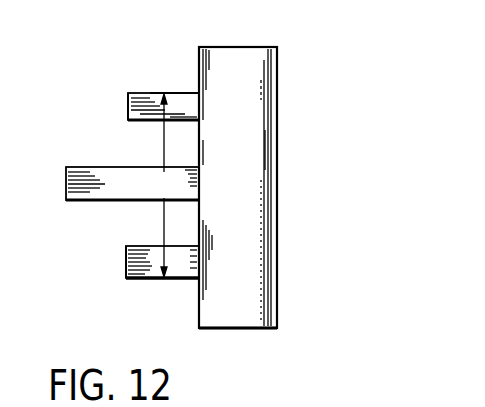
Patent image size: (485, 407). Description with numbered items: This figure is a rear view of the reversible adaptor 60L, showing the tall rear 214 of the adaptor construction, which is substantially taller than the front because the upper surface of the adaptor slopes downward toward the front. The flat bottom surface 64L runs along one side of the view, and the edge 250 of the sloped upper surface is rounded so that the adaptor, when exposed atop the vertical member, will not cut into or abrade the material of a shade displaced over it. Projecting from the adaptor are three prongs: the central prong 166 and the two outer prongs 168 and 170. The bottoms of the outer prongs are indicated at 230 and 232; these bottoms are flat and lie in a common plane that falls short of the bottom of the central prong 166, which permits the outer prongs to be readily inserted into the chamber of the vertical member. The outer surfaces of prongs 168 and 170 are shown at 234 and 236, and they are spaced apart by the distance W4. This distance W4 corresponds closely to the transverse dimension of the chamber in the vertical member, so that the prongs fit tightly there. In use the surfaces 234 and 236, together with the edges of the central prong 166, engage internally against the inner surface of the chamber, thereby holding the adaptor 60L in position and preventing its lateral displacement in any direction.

The adaptor 60L is at (251, 81).
The flat bottom surface 64L is at (199, 60).
The rear 214 is at (227, 315).
The rounded edge 250 is at (263, 148).
The bottom of prong 232 is at (128, 108).
The outer surface of prong 236 is at (150, 92).
The prong 170 is at (130, 96).
The central prong 166 is at (80, 168).
The bottom of prong 230 is at (127, 257).
The prong 168 is at (127, 272).
The outer surface of prong 234 is at (150, 279).
The distance W4 is at (157, 185).